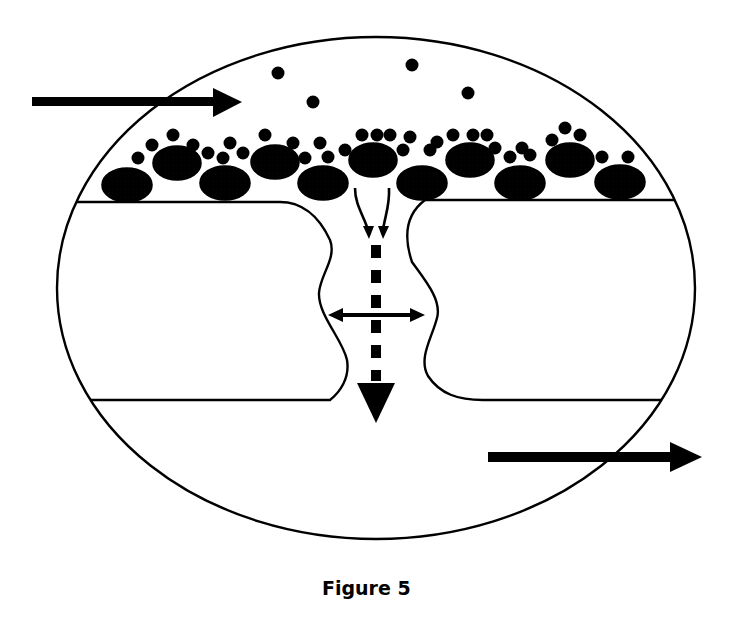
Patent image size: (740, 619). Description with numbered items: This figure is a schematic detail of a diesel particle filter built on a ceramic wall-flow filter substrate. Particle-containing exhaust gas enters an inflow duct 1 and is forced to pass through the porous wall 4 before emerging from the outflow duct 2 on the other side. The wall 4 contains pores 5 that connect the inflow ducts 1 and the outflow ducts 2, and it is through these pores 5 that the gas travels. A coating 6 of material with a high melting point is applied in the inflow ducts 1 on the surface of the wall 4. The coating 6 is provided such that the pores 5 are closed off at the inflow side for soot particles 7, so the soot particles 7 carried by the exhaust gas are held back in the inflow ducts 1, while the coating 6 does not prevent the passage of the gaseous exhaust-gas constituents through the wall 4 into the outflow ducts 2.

The inflow ducts 1 is at (292, 72).
The outflow ducts 2 is at (529, 474).
The wall 4 is at (375, 300).
The pores 5 is at (376, 305).
The coating 6 is at (477, 150).
The soot particles 7 is at (474, 91).